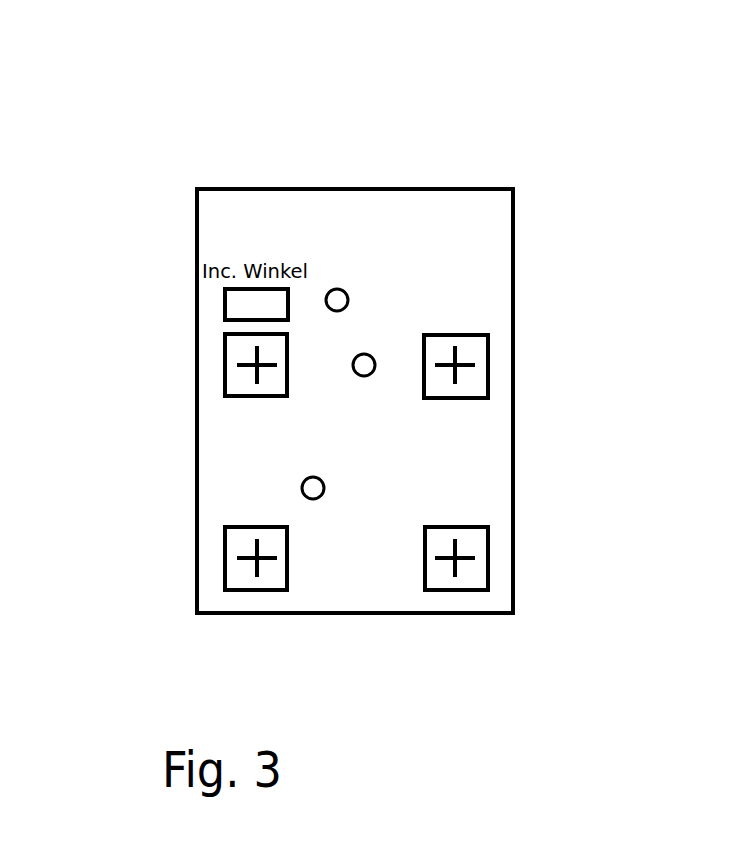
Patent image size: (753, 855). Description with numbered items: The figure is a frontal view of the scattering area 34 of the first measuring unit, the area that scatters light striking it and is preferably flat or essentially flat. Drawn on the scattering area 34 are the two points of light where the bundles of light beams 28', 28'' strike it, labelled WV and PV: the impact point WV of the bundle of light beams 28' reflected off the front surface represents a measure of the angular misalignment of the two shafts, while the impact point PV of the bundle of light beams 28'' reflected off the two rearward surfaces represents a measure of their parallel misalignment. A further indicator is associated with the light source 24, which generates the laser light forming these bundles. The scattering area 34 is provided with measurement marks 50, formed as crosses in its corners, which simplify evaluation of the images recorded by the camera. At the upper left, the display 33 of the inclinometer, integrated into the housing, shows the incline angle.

The light source 24 is at (337, 292).
The bundle of light beams reflected off the front surface 28' is at (394, 221).
The bundle of light beams reflected off the rearward surfaces 28'' is at (501, 488).
The display 33 is at (228, 309).
The scattering area 34 is at (230, 465).
The measurement marks 50 is at (230, 577).